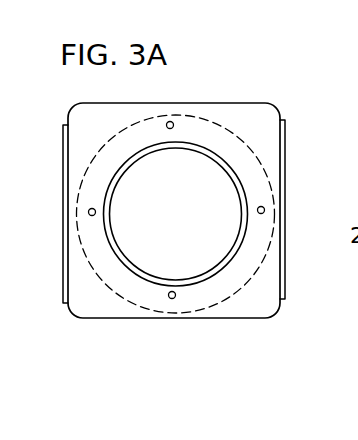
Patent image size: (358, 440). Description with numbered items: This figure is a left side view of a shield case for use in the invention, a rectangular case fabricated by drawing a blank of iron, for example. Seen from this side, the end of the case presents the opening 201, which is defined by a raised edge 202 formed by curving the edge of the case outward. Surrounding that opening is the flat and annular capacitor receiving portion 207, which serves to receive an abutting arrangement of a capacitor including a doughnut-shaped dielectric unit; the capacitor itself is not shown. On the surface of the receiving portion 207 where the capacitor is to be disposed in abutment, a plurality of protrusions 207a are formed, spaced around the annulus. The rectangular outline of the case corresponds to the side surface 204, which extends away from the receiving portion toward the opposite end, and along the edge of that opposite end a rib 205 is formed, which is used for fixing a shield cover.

The opening 201 is at (213, 207).
The raised edge 202 is at (188, 281).
The side surface 204 is at (104, 320).
The rib 205 is at (285, 131).
The capacitor receiving portion 207 is at (226, 132).
The protrusions 207a is at (175, 121).